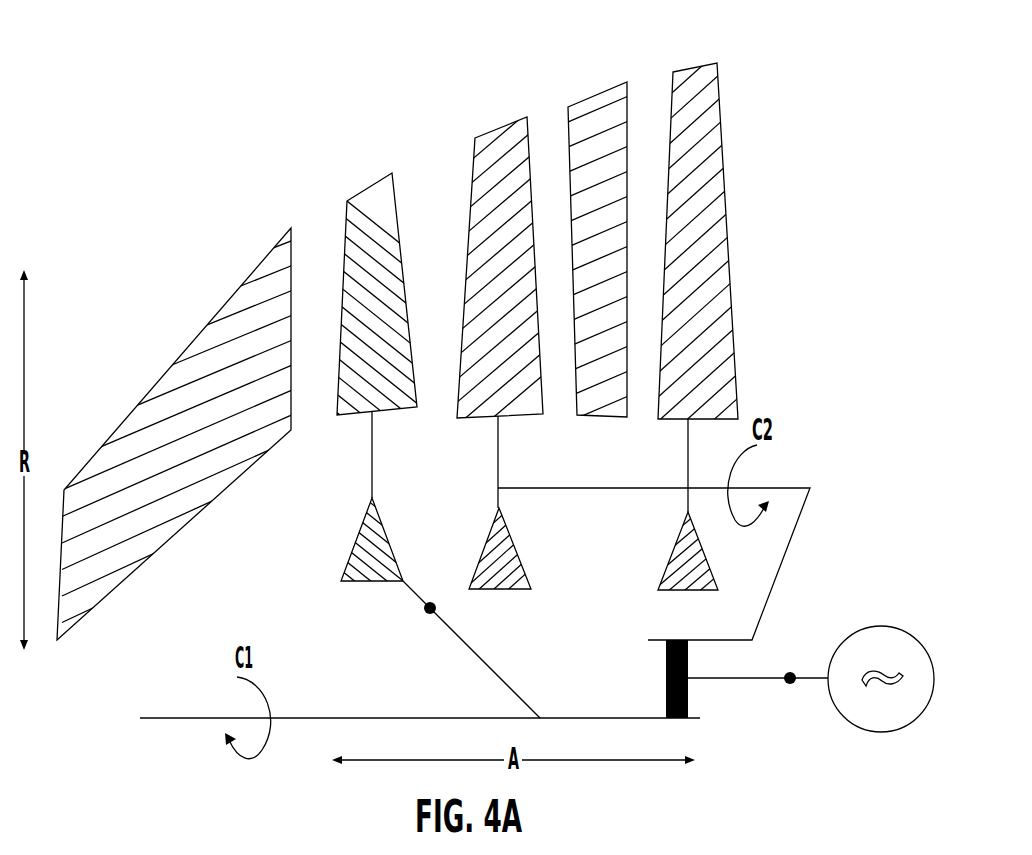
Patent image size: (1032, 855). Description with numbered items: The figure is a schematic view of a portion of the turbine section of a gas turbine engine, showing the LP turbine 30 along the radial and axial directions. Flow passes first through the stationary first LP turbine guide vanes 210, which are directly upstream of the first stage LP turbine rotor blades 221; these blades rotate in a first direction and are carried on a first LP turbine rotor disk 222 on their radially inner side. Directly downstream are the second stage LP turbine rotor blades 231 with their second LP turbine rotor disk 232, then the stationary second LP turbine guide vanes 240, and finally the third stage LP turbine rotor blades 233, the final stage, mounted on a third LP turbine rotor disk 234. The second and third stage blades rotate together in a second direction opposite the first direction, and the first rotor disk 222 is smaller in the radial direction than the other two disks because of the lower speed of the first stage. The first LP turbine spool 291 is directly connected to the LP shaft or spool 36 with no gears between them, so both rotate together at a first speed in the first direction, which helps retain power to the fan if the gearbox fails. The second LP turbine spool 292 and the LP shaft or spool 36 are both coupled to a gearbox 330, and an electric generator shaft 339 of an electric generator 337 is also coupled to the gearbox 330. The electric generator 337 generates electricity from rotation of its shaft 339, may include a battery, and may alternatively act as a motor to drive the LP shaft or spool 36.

The LP turbine 30 is at (185, 124).
The LP shaft or spool 36 is at (197, 717).
The first LP turbine guide vanes 210 is at (152, 420).
The first stage LP turbine rotor blades 221 is at (371, 192).
The first LP turbine rotor disk 222 is at (367, 545).
The second stage LP turbine rotor blades 231 is at (501, 140).
The second LP turbine rotor disk 232 is at (505, 560).
The third stage LP turbine rotor blades 233 is at (698, 82).
The third LP turbine rotor disk 234 is at (683, 578).
The second LP turbine guide vanes 240 is at (597, 104).
The first LP turbine spool 291 is at (425, 614).
The second LP turbine spool 292 is at (790, 545).
The gearbox 330 is at (714, 707).
The electric generator 337 is at (890, 645).
The electric generator shaft 339 is at (790, 672).